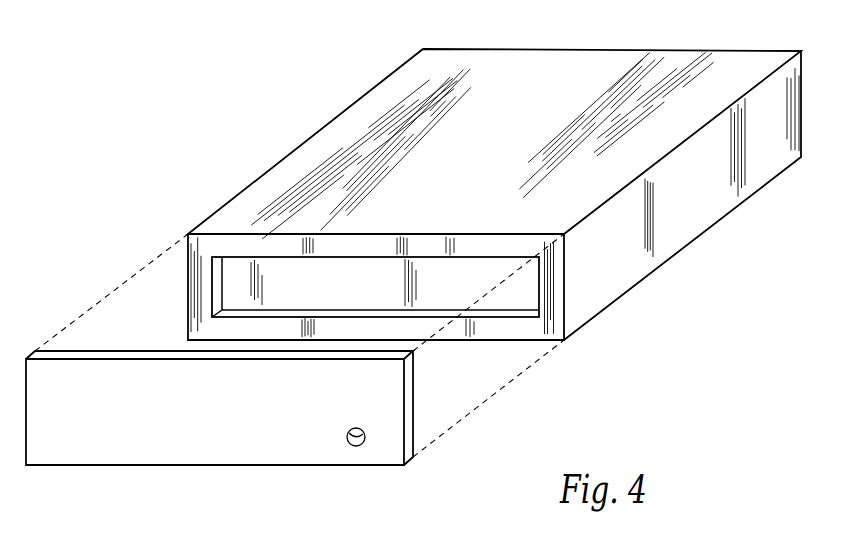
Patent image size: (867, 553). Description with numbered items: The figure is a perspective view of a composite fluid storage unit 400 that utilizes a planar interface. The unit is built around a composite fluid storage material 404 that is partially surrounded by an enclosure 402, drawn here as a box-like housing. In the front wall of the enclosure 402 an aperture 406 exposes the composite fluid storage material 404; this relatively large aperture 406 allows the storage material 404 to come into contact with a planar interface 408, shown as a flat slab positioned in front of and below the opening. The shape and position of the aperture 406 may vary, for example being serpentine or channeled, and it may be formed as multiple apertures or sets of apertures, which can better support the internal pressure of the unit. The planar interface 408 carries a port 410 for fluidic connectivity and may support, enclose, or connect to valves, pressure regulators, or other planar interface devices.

The composite fluid storage unit 400 is at (129, 115).
The enclosure 402 is at (593, 50).
The composite fluid storage material 404 is at (452, 277).
The aperture 406 is at (388, 312).
The planar interface 408 is at (210, 456).
The port 410 is at (355, 447).